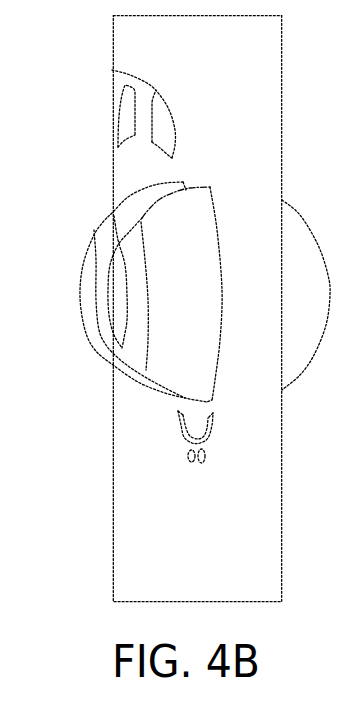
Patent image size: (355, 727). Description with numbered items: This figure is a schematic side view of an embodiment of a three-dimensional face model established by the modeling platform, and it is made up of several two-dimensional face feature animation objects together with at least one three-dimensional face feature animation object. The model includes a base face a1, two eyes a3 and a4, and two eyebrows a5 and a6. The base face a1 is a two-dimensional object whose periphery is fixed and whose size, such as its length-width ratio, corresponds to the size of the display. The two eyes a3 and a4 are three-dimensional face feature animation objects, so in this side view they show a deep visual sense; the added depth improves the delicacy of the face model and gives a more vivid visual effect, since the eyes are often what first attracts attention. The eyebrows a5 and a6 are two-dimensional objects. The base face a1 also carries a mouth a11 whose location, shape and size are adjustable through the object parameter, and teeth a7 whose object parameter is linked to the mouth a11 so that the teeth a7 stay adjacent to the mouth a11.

The base face a1 is at (125, 43).
The eye a3 is at (86, 281).
The eye a4 is at (137, 238).
The eyebrow a5 is at (125, 115).
The eyebrow a6 is at (112, 71).
The teeth a7 is at (188, 455).
The mouth a11 is at (183, 436).